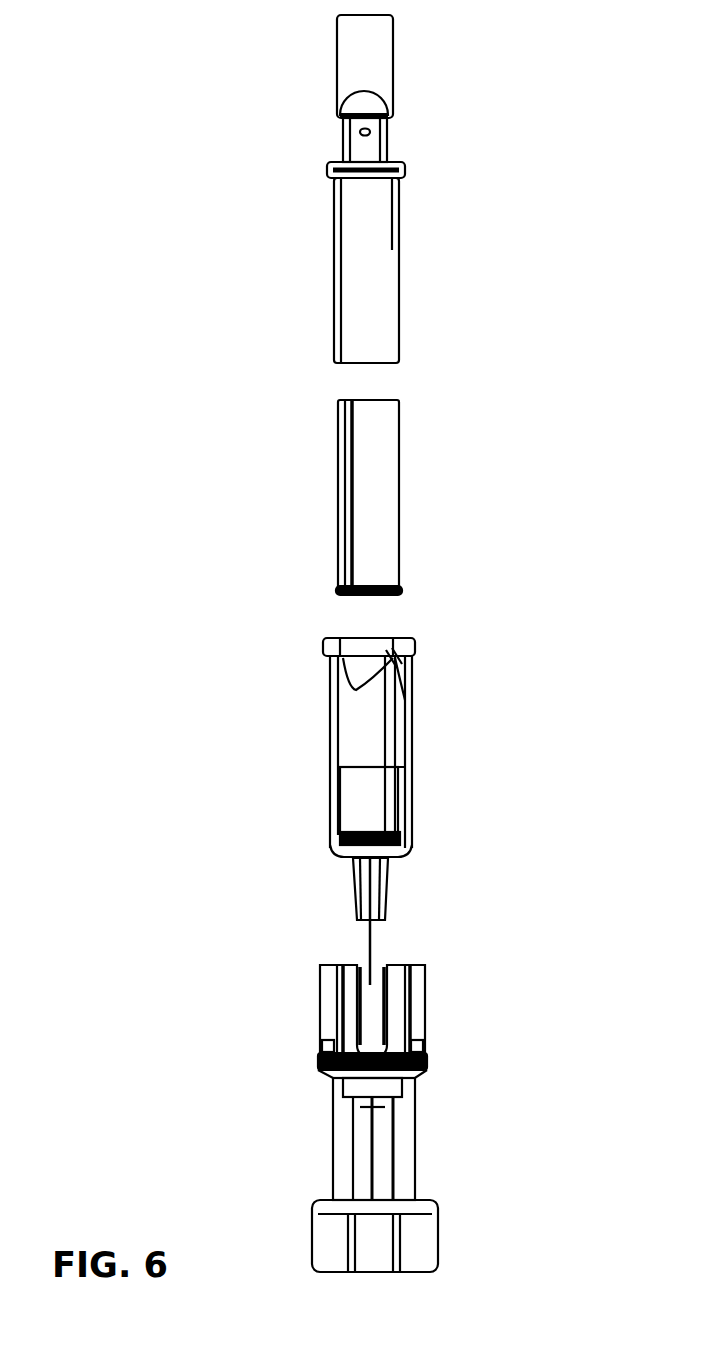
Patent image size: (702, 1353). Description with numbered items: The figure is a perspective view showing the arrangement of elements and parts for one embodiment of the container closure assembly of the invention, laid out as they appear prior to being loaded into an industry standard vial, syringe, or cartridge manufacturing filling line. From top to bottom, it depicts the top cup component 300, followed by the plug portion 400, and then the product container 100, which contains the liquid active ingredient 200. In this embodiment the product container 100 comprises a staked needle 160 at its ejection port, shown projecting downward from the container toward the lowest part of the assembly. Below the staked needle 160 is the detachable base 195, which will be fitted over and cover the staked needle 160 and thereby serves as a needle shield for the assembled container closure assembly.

The product container 100 is at (337, 708).
The liquid active ingredient 200 is at (352, 805).
The top cup component 300 is at (331, 242).
The plug portion 400 is at (342, 470).
The staked needle 160 is at (372, 951).
The detachable base 195 is at (330, 1150).